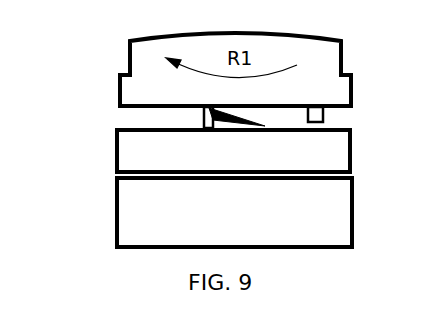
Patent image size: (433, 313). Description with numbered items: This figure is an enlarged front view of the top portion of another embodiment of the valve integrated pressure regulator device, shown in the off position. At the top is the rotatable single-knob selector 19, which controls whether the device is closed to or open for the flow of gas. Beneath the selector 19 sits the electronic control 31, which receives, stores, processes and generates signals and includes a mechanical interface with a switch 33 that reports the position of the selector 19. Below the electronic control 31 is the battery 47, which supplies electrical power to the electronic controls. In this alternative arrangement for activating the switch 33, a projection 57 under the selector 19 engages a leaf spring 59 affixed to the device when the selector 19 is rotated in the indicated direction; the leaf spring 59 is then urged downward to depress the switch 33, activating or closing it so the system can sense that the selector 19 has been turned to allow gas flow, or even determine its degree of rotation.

The selector 19 is at (118, 80).
The switch 33 is at (203, 118).
The leaf spring 59 is at (248, 129).
The projection 57 is at (327, 116).
The electronic control 31 is at (130, 156).
The battery 47 is at (142, 228).